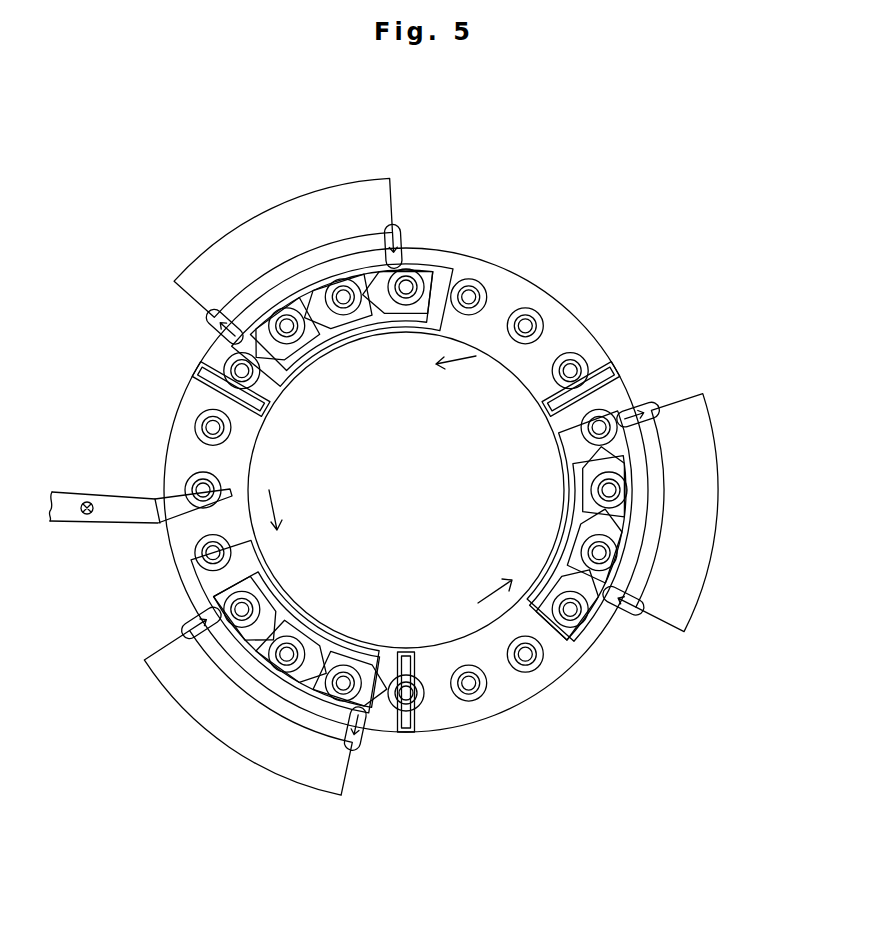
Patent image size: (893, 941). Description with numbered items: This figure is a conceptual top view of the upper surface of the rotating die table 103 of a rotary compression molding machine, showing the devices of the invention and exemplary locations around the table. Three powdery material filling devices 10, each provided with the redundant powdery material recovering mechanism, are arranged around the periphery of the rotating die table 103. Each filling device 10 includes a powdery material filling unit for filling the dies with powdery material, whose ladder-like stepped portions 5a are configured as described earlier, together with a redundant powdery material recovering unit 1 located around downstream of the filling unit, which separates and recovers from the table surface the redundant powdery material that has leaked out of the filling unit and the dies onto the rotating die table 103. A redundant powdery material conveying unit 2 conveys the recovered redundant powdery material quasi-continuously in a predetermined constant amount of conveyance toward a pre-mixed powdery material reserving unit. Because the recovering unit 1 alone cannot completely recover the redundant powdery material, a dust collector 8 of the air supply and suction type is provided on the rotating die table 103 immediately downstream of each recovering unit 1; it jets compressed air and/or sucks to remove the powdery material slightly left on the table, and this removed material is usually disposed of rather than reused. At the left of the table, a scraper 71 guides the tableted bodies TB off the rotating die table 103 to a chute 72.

The rotating die table 103 is at (514, 291).
The redundant powdery material recovering unit 1 is at (266, 349).
The ladder-like stepped portions 5a is at (337, 342).
The dust collector 8 is at (200, 371).
The redundant powdery material conveying unit 2 is at (206, 320).
The powdery material filling device 10 is at (290, 179).
The scraper 71 is at (172, 520).
The chute 72 is at (113, 513).
The tableted bodies TB is at (87, 502).